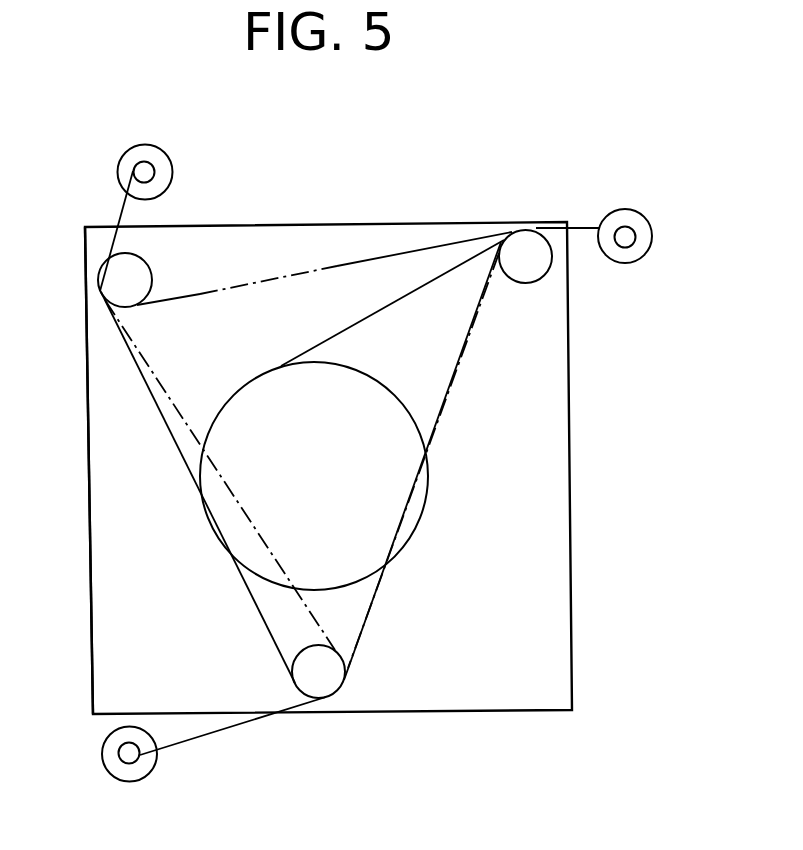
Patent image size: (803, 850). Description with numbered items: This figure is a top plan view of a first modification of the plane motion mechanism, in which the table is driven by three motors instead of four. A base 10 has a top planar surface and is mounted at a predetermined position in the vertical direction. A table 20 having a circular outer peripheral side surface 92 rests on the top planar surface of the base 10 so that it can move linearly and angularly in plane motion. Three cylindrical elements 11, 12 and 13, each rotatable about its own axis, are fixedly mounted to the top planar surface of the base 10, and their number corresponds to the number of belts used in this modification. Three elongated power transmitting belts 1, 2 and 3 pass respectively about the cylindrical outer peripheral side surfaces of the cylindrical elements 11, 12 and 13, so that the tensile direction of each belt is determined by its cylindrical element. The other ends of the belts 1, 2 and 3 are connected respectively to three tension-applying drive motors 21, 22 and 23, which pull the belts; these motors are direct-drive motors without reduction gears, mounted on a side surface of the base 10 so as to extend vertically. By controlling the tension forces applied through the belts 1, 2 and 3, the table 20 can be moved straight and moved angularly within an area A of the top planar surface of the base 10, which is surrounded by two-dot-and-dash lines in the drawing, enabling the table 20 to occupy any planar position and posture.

The belt 1 is at (352, 320).
The belt 2 is at (387, 597).
The belt 3 is at (180, 470).
The base 10 is at (338, 226).
The cylindrical element 11 is at (537, 272).
The cylindrical element 12 is at (298, 670).
The cylindrical element 13 is at (147, 280).
The table 20 is at (388, 393).
The drive motor 21 is at (620, 212).
The drive motor 22 is at (118, 173).
The drive motor 23 is at (143, 772).
The circular outer peripheral side surface 92 is at (103, 447).
The area A is at (470, 338).